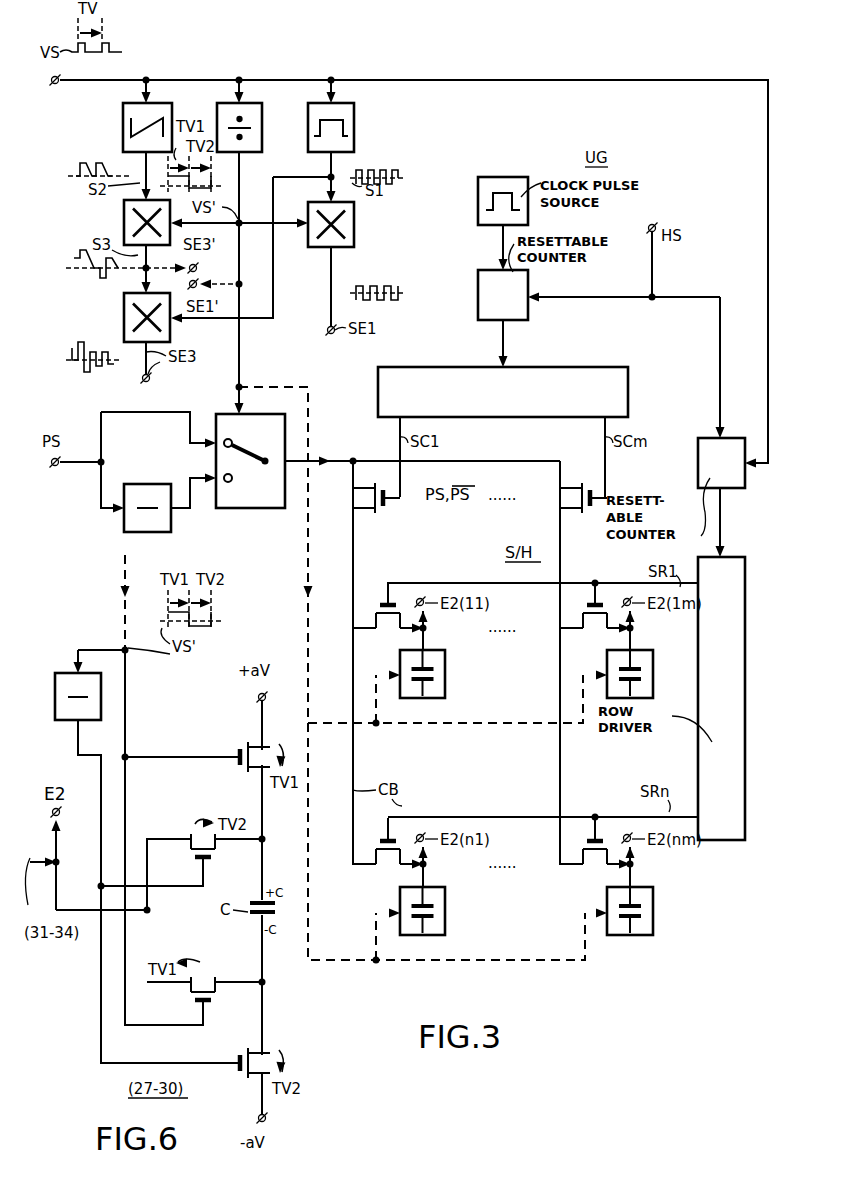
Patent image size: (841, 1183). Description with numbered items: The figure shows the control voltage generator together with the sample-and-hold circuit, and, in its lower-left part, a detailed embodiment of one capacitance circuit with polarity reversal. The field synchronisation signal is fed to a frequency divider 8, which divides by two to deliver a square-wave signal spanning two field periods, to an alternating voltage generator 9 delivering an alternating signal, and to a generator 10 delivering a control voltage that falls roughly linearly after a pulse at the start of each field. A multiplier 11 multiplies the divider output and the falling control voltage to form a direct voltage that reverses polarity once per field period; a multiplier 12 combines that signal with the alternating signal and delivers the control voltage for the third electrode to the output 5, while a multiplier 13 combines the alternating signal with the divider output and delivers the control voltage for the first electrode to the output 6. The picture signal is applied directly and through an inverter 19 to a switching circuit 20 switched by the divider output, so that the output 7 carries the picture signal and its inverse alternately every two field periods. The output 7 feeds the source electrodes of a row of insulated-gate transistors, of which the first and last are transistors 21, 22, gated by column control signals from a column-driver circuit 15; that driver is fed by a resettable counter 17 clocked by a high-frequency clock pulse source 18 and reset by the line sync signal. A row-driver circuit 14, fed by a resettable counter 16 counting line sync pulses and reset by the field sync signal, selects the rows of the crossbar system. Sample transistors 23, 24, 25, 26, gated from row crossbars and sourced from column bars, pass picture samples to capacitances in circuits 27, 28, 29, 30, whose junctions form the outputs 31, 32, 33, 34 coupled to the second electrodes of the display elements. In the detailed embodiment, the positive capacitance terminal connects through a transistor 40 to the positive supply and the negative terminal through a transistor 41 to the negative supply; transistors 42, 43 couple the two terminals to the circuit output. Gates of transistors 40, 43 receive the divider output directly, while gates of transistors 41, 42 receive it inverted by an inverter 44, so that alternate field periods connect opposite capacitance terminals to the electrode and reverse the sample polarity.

In FIG. 3, the output 5 is at (142, 380).
In FIG. 3, the output 6 is at (326, 332).
In FIG. 3, the output 7 is at (333, 459).
In FIG. 3, the frequency divider 8 is at (254, 101).
In FIG. 3, the alternating voltage generator 9 is at (346, 101).
In FIG. 3, the generator 10 is at (163, 101).
In FIG. 3, the multiplier 11 is at (124, 217).
In FIG. 3, the multiplier 12 is at (124, 319).
In FIG. 3, the multiplier 13 is at (354, 234).
In FIG. 3, the row-driver circuit 14 is at (698, 746).
In FIG. 3, the column-driver circuit 15 is at (599, 366).
In FIG. 3, the resettable counter 16 is at (698, 464).
In FIG. 3, the resettable counter 17 is at (478, 295).
In FIG. 3, the high-frequency clock pulse source 18 is at (478, 198).
In FIG. 3, the inverter 19 is at (124, 522).
In FIG. 3, the switching circuit 20 is at (216, 414).
In FIG. 3, the transistor 21 is at (380, 512).
In FIG. 3, the transistor 22 is at (587, 512).
In FIG. 3, the transistor 23 is at (378, 630).
In FIG. 3, the transistor 24 is at (585, 630).
In FIG. 3, the transistor 25 is at (378, 866).
In FIG. 3, the transistor 26 is at (585, 866).
In FIG. 3, the circuit 27 is at (446, 675).
In FIG. 3, the circuit 28 is at (654, 675).
In FIG. 3, the circuit 29 is at (446, 912).
In FIG. 3, the circuit 30 is at (654, 912).
In FIG. 3, the output 31 is at (430, 620).
In FIG. 3, the output 32 is at (637, 620).
In FIG. 3, the output 33 is at (430, 856).
In FIG. 3, the output 34 is at (637, 856).
In FIG. 6, the transistor 40 is at (240, 750).
In FIG. 6, the transistor 41 is at (241, 1056).
In FIG. 6, the transistor 42 is at (195, 858).
In FIG. 6, the transistor 43 is at (205, 980).
In FIG. 6, the inverter 44 is at (66, 720).